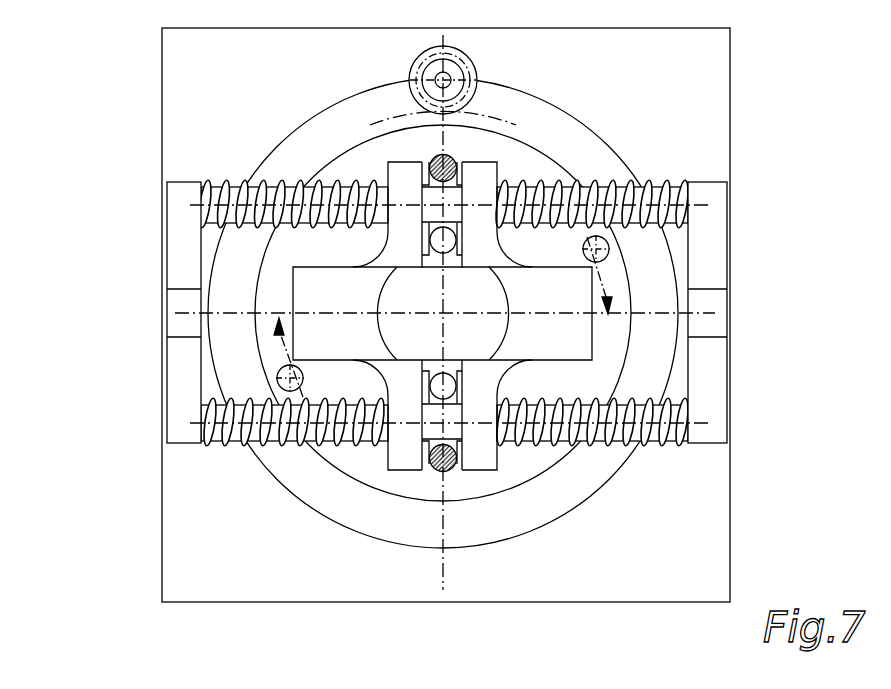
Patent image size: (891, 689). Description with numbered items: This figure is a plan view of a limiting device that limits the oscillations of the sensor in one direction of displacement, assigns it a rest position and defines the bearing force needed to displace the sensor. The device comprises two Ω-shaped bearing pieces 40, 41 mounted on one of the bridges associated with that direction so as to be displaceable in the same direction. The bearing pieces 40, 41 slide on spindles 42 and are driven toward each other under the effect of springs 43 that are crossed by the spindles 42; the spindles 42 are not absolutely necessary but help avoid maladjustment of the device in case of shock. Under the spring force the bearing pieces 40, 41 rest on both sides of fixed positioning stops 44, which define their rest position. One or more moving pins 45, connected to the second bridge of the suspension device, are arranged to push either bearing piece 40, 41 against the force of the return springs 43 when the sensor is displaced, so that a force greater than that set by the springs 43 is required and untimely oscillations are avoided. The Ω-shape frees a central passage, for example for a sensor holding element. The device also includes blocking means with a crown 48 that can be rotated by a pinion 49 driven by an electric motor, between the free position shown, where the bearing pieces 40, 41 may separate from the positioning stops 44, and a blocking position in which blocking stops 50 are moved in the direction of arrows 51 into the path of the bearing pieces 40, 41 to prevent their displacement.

The bearing piece 40 is at (308, 285).
The bearing piece 41 is at (570, 343).
The spindle 42 is at (383, 186).
The spring 43 is at (298, 178).
The positioning stop 44 is at (437, 252).
The moving pin 45 is at (452, 157).
The crown 48 is at (292, 248).
The pinion 49 is at (464, 66).
The blocking stop 50 is at (278, 380).
The arrow 51 is at (277, 342).